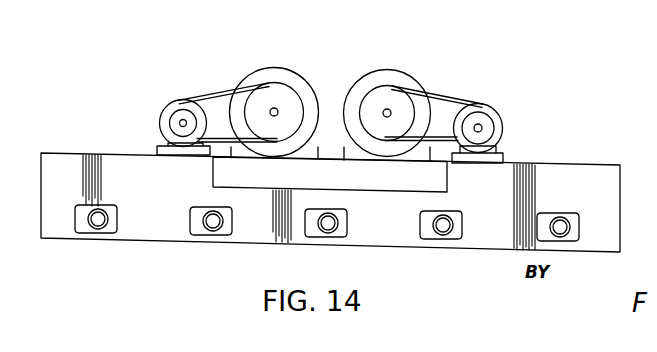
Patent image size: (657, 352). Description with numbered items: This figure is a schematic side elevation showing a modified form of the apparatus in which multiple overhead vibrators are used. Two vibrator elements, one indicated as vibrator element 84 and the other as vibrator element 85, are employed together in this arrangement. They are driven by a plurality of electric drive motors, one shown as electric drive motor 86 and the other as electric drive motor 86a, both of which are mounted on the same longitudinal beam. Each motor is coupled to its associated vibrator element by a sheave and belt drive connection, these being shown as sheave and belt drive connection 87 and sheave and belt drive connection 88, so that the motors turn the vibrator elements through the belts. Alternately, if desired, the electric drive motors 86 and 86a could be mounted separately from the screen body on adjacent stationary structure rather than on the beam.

The vibrator element 84 is at (412, 68).
The vibrator element 85 is at (309, 71).
The electric drive motor 86 is at (503, 133).
The electric drive motor 86a is at (176, 101).
The sheave and belt drive connection 87 is at (446, 97).
The sheave and belt drive connection 88 is at (219, 98).